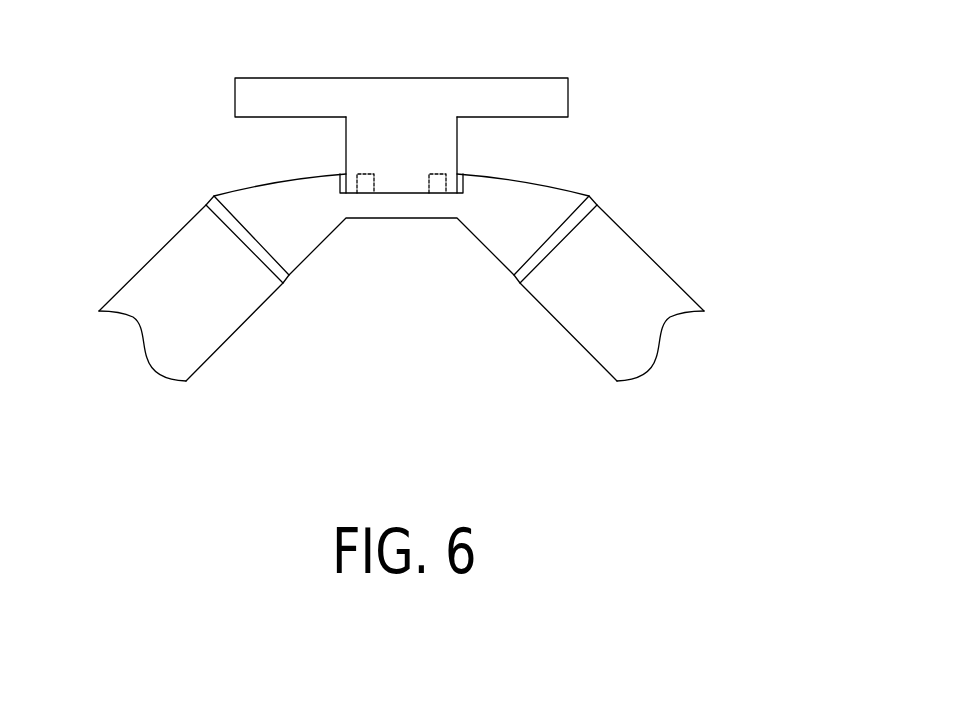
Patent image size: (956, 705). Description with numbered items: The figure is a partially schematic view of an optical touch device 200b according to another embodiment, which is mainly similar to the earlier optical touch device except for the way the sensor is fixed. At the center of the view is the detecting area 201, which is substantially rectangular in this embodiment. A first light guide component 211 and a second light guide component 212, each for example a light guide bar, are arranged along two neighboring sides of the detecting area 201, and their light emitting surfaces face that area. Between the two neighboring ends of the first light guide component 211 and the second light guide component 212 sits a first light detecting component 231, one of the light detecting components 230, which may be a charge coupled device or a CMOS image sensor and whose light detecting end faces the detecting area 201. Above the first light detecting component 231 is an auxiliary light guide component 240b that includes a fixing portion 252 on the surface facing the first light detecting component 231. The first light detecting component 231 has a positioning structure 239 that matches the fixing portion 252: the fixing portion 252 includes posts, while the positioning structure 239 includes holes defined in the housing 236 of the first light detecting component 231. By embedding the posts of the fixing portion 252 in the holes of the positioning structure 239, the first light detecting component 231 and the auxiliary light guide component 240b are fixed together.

The optical touch device 200b is at (469, 227).
The detecting area 201 is at (319, 348).
The first light guide component 211 is at (633, 247).
The second light guide component 212 is at (167, 246).
The light detecting components 230 is at (467, 155).
The first light detecting component 231 is at (445, 143).
The housing 236 is at (310, 95).
The positioning structure 239 is at (363, 170).
The auxiliary light guide component 240b is at (266, 211).
The fixing portion 252 is at (349, 172).